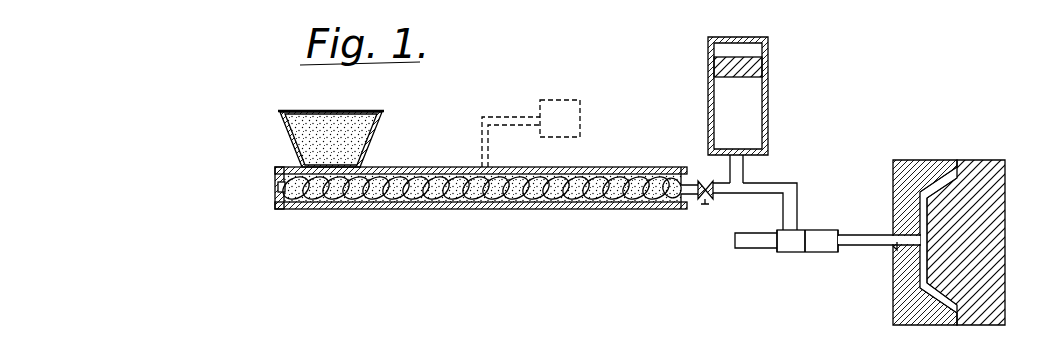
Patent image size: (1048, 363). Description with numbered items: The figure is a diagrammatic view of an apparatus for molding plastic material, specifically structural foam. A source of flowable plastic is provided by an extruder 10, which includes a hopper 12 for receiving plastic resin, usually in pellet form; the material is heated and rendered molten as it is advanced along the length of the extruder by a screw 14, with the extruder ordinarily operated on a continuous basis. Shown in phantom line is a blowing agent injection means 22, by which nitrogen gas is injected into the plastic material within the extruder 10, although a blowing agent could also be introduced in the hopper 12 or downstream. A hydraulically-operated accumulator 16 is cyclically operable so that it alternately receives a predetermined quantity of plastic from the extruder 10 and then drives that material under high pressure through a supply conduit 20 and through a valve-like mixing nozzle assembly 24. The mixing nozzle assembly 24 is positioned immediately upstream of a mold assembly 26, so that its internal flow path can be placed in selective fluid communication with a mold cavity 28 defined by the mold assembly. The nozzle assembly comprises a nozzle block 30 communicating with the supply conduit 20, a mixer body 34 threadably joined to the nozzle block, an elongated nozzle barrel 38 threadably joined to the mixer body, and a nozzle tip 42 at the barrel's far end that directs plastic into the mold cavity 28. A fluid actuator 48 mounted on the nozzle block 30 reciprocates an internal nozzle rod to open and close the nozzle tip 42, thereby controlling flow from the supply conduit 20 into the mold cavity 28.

The extruder 10 is at (412, 212).
The hopper 12 is at (384, 112).
The screw 14 is at (520, 186).
The accumulator 16 is at (769, 83).
The supply conduit 20 is at (798, 197).
The blowing agent injection means 22 is at (580, 135).
The mixing nozzle assembly 24 is at (796, 262).
The mold assembly 26 is at (968, 160).
The mold cavity 28 is at (926, 214).
The nozzle block 30 is at (784, 253).
The mixer body 34 is at (826, 253).
The nozzle barrel 38 is at (858, 238).
The nozzle tip 42 is at (898, 250).
The fluid actuator 48 is at (744, 247).